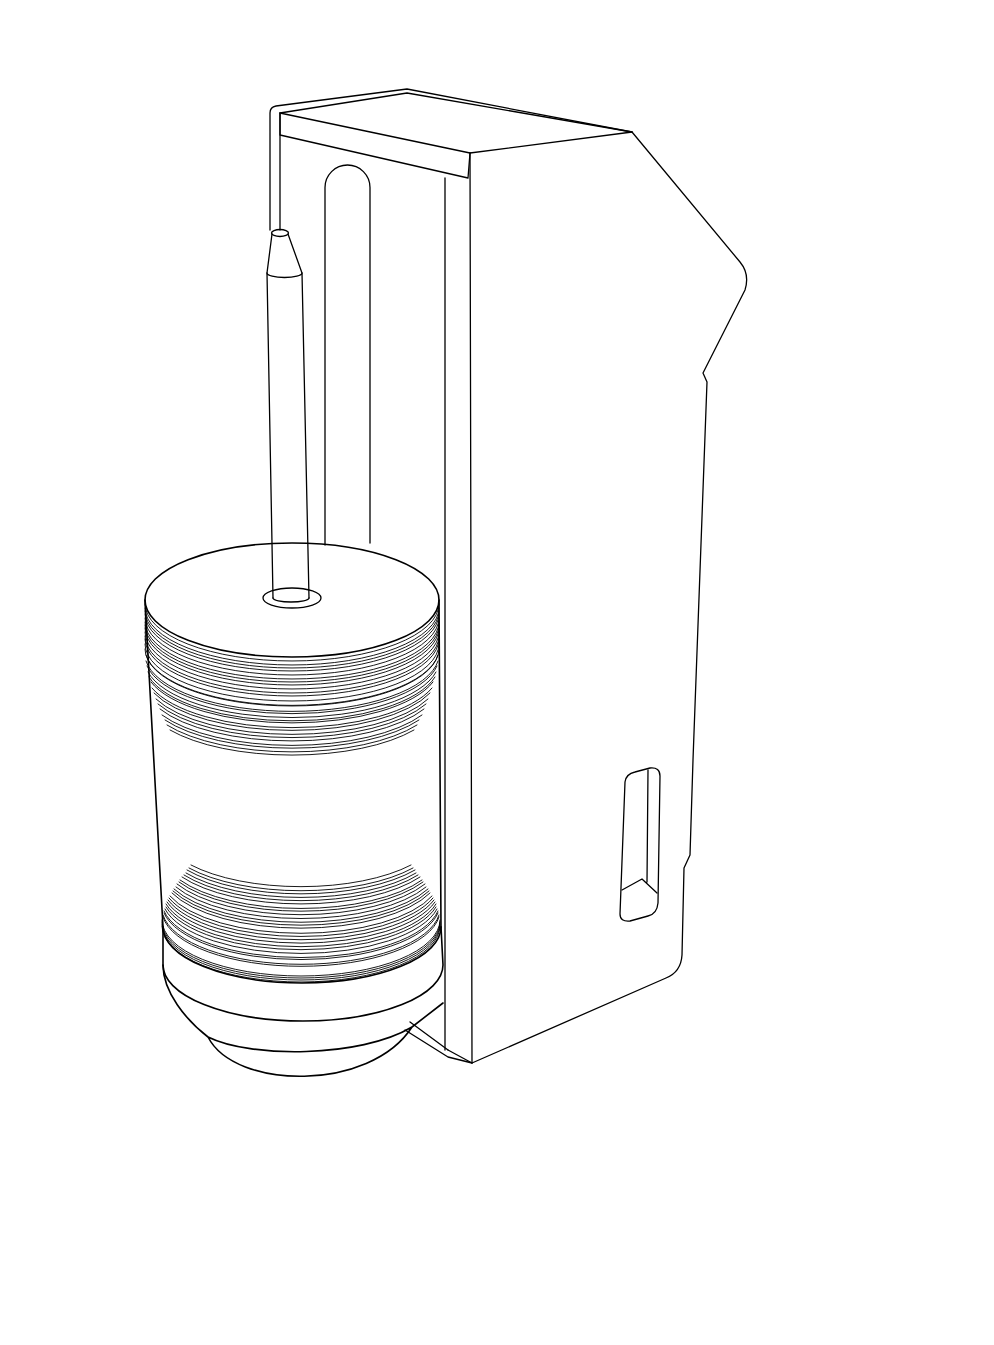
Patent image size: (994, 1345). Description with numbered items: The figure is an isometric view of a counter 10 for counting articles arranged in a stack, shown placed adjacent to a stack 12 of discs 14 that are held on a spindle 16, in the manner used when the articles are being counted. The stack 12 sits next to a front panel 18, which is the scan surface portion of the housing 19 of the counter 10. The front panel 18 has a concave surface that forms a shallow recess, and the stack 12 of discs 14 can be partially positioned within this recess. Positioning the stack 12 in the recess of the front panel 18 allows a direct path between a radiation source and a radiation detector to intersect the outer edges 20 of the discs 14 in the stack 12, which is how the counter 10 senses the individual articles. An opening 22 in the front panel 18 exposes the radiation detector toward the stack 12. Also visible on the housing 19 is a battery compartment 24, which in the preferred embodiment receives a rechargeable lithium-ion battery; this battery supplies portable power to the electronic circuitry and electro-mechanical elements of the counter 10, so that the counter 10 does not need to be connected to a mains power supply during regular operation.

The counter 10 is at (775, 80).
The stack 12 is at (134, 837).
The discs 14 is at (210, 587).
The spindle 16 is at (277, 400).
The front panel 18 is at (288, 154).
The housing 19 is at (678, 233).
The outer edges 20 is at (143, 620).
The opening 22 is at (345, 201).
The battery compartment 24 is at (640, 812).